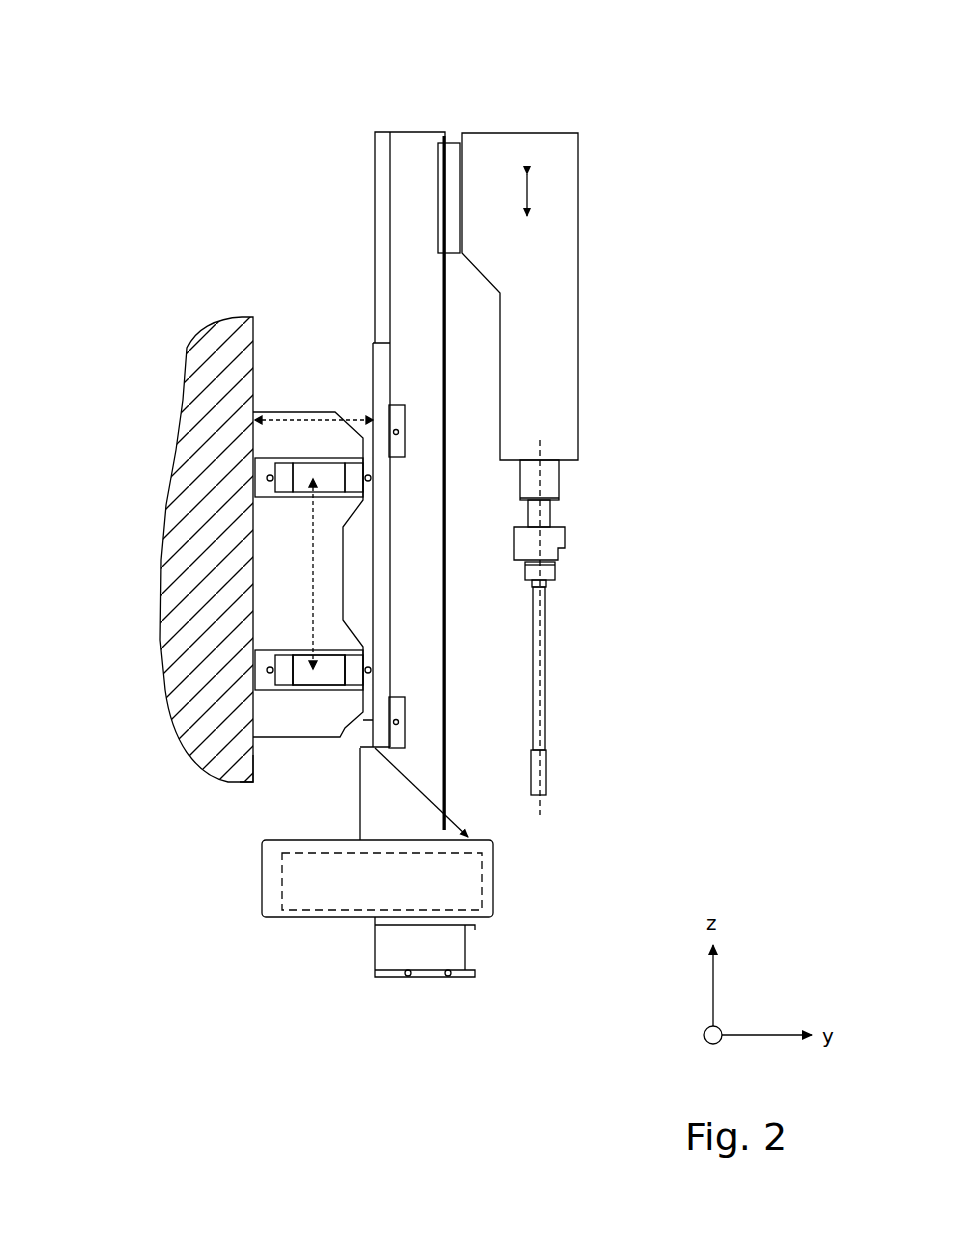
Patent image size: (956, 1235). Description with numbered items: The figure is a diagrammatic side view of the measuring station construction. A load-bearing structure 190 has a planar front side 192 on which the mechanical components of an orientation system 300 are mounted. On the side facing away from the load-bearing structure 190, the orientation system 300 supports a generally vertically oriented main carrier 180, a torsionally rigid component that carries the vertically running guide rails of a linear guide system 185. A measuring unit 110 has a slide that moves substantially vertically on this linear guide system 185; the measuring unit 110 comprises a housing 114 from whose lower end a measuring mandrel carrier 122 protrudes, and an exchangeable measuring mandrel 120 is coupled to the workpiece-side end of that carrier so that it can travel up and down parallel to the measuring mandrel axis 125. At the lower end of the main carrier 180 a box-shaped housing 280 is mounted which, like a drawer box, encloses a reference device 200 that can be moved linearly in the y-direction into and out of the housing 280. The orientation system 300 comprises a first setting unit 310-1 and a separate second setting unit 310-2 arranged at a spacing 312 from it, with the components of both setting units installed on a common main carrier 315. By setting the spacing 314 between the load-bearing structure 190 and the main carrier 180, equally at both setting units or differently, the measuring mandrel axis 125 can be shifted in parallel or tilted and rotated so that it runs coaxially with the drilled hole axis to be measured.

The measuring unit 110 is at (562, 409).
The housing 114 is at (560, 325).
The measuring mandrel 120 is at (548, 690).
The measuring mandrel carrier 122 is at (550, 482).
The measuring mandrel axis 125 is at (540, 540).
The main carrier 180 is at (416, 142).
The linear guide system 185 is at (445, 344).
The load-bearing structure 190 is at (211, 338).
The planar front side 192 is at (257, 756).
The reference device 200 is at (300, 882).
The box-shaped housing 280 is at (305, 920).
The orientation system 300 is at (206, 491).
The first setting unit 310-1 is at (325, 393).
The second setting unit 310-2 is at (298, 630).
The spacing 312 is at (313, 548).
The spacing 314 is at (302, 422).
The common main carrier 315 is at (263, 635).